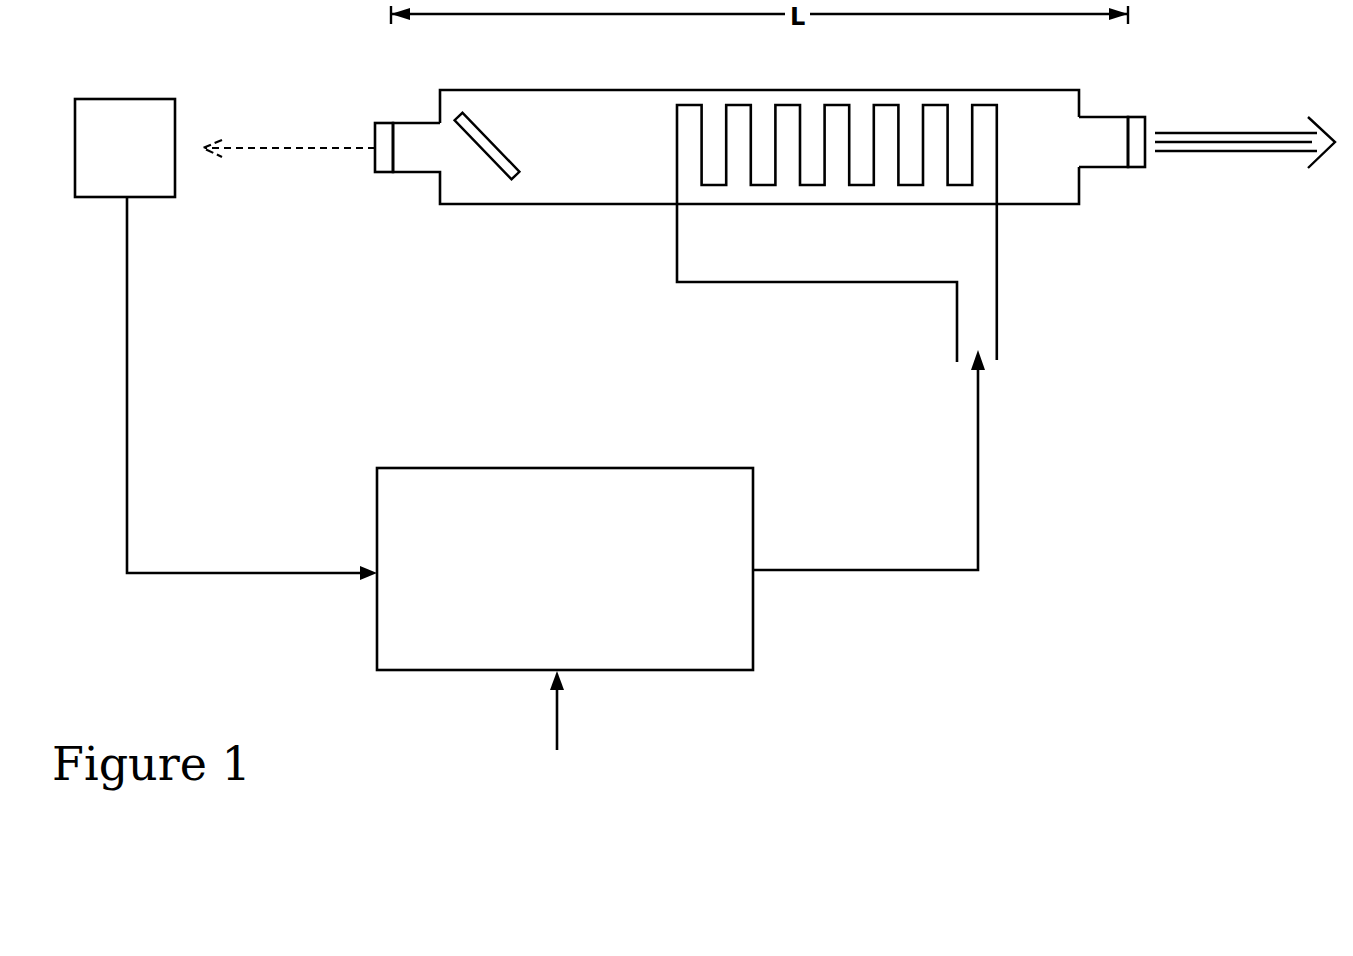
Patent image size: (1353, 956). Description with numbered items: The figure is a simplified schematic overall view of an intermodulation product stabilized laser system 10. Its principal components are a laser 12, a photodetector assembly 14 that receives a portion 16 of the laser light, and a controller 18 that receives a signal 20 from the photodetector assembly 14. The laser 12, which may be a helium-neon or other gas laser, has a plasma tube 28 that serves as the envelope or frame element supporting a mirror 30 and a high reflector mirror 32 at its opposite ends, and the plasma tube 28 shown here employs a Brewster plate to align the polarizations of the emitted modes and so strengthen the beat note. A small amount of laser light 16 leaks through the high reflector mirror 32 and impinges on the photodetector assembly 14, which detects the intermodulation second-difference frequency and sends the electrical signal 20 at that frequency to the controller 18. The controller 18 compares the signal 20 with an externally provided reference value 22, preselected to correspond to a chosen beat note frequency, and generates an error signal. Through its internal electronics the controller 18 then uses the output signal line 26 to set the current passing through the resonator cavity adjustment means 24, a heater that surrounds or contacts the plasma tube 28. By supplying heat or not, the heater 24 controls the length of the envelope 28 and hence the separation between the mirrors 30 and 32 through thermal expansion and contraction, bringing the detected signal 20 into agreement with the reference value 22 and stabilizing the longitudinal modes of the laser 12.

The system 10 is at (385, 68).
The laser 12 is at (698, 86).
The photodetector assembly 14 is at (122, 99).
The portion of laser light 16 is at (237, 150).
The controller 18 is at (543, 467).
The signal 20 is at (127, 478).
The reference value or signal 22 is at (558, 713).
The resonator cavity adjustment means 24 is at (676, 222).
The signal 26 is at (978, 428).
The plasma tube 28 is at (1043, 89).
The mirror 30 is at (1130, 116).
The high reflector mirror 32 is at (385, 122).